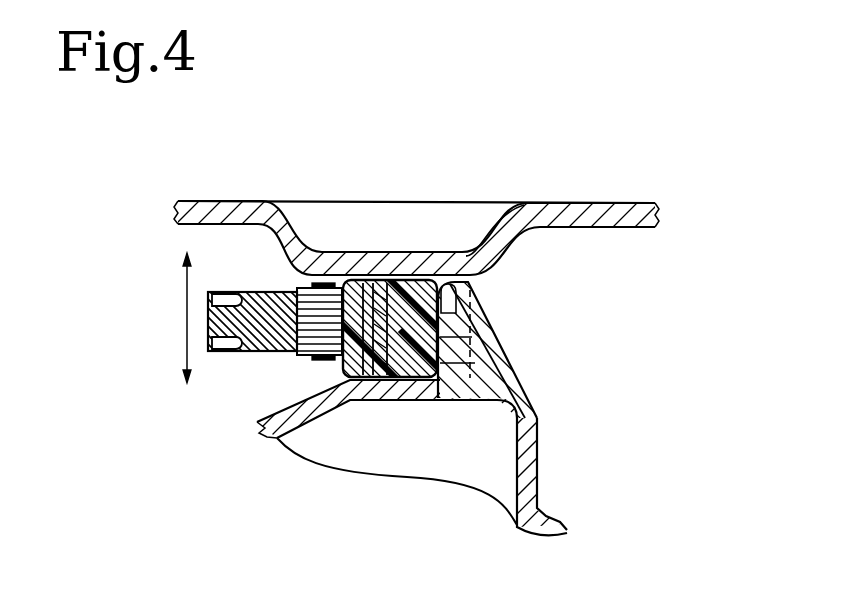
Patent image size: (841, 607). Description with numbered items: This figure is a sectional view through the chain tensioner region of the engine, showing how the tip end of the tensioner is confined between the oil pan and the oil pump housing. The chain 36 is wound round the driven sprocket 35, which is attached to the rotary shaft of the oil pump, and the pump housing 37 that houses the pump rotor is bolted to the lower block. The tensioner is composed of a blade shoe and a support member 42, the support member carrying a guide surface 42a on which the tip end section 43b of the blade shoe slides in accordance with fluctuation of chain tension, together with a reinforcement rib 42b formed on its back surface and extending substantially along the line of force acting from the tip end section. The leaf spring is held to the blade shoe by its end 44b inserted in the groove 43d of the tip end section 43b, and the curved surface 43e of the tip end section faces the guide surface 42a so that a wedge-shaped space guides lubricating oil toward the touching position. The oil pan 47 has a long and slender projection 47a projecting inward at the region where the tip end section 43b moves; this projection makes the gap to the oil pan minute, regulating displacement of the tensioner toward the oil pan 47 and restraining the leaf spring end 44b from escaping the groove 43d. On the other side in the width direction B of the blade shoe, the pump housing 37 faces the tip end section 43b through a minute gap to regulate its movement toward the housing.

The driven sprocket 35 is at (268, 292).
The chain 36 is at (300, 355).
The pump housing 37 is at (527, 473).
The support member 42 is at (455, 362).
The guide surface 42a is at (440, 337).
The reinforcement rib 42b is at (487, 313).
The tip end section 43b is at (413, 382).
The groove 43d is at (343, 382).
The curved surface 43e is at (437, 278).
The end of leaf spring 44b is at (367, 278).
The oil pan 47 is at (616, 213).
The projection 47a is at (464, 255).
The width direction B is at (173, 318).